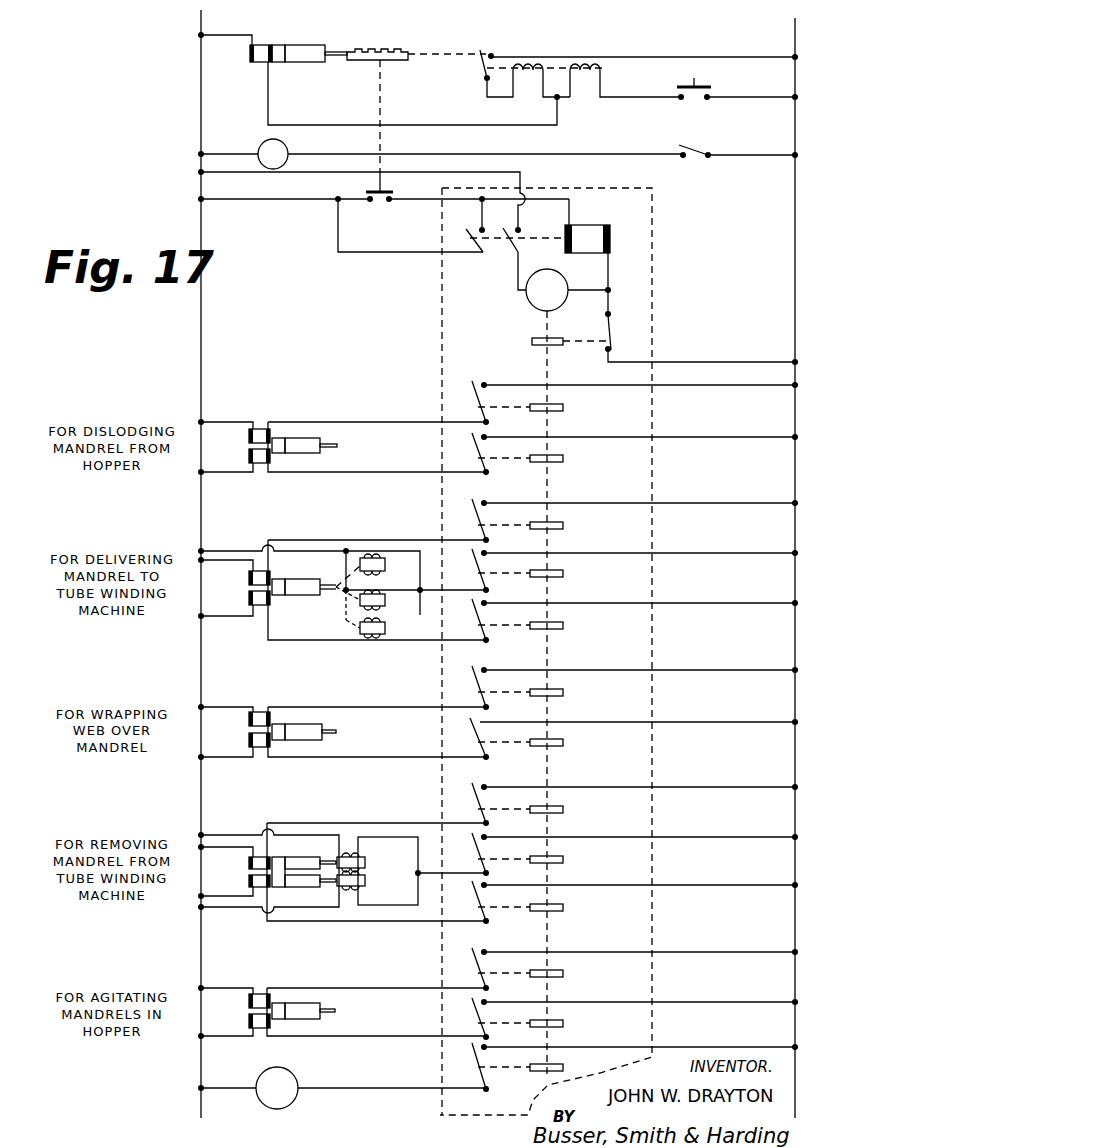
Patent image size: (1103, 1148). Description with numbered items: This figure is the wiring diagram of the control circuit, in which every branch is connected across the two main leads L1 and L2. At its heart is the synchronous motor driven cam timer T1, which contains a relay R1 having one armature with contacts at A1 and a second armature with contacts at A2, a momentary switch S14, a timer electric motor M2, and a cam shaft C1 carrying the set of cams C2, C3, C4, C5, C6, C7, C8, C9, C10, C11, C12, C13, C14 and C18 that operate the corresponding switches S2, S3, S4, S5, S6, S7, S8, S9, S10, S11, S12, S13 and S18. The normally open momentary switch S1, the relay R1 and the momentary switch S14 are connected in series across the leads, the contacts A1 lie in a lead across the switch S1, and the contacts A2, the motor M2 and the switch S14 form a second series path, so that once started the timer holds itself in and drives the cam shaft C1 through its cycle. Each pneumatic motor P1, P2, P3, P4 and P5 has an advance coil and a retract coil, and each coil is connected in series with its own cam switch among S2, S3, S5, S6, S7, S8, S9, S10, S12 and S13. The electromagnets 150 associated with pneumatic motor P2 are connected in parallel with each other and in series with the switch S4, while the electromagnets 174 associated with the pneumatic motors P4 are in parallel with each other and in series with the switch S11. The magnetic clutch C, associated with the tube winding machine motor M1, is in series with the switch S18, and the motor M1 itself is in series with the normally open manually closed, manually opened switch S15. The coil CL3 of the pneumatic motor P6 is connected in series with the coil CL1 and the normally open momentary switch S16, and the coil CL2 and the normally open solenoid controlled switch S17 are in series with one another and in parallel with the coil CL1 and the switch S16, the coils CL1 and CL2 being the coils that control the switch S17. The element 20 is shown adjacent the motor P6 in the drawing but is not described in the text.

The resistor / heater coil 20 is at (379, 50).
The electromagnets 150 is at (381, 556).
The electromagnets 174 is at (365, 862).
The main lead L1 is at (188, 563).
The main lead L2 is at (808, 563).
The coil of solenoid controlled switch CL1 is at (623, 62).
The coil of solenoid controlled switch CL2 is at (540, 62).
The coil of pneumatic motor CL3 is at (248, 64).
The pneumatic motor P6 is at (309, 38).
The pneumatic motor P1 is at (343, 444).
The pneumatic motor P2 is at (343, 590).
The pneumatic motor P3 is at (343, 730).
The pneumatic motor P4 is at (343, 872).
The pneumatic motor P5 is at (343, 1011).
The normally open momentary switch S1 is at (385, 206).
The cam operated switch S2 is at (621, 403).
The cam operated switch S3 is at (621, 454).
The cam operated switch S4 is at (621, 571).
The cam operated switch S5 is at (621, 521).
The cam operated switch S6 is at (621, 621).
The cam operated switch S7 is at (621, 688).
The cam operated switch S8 is at (621, 739).
The cam operated switch S9 is at (621, 804).
The cam operated switch S10 is at (620, 902).
The cam operated switch S11 is at (620, 854).
The cam operated switch S12 is at (620, 969).
The cam operated switch S13 is at (620, 1019).
The momentary switch S14 is at (700, 336).
The normally open manually closed manually opened switch S15 is at (736, 165).
The normally open momentary switch S16 is at (736, 102).
The normally open solenoid controlled switch S17 is at (614, 74).
The cam operated switch S18 is at (620, 1067).
The cam shaft C1 is at (548, 488).
The cam C2 is at (563, 407).
The cam C3 is at (563, 458).
The cam C4 is at (563, 574).
The cam C5 is at (563, 525).
The cam C6 is at (563, 626).
The cam C7 is at (563, 693).
The cam C8 is at (563, 743).
The cam C9 is at (563, 810).
The cam C10 is at (563, 908).
The cam C11 is at (563, 860).
The cam C12 is at (563, 974).
The cam C13 is at (563, 1024).
The cam C14 is at (531, 342).
The cam C18 is at (563, 1066).
The magnetic clutch C is at (343, 1088).
The electric motor of the tube winding machine M1 is at (442, 154).
The timer electric motor M2 is at (512, 303).
The relay R1 is at (587, 226).
The relay contacts A1 is at (468, 230).
The relay contacts A2 is at (526, 250).
The synchronous motor driven cam timer T1 is at (440, 355).